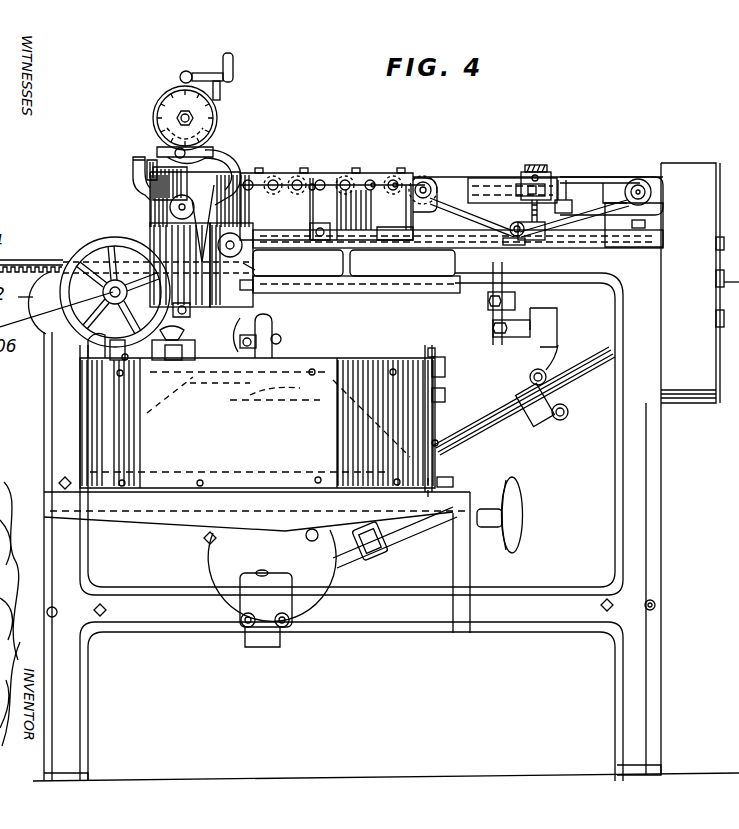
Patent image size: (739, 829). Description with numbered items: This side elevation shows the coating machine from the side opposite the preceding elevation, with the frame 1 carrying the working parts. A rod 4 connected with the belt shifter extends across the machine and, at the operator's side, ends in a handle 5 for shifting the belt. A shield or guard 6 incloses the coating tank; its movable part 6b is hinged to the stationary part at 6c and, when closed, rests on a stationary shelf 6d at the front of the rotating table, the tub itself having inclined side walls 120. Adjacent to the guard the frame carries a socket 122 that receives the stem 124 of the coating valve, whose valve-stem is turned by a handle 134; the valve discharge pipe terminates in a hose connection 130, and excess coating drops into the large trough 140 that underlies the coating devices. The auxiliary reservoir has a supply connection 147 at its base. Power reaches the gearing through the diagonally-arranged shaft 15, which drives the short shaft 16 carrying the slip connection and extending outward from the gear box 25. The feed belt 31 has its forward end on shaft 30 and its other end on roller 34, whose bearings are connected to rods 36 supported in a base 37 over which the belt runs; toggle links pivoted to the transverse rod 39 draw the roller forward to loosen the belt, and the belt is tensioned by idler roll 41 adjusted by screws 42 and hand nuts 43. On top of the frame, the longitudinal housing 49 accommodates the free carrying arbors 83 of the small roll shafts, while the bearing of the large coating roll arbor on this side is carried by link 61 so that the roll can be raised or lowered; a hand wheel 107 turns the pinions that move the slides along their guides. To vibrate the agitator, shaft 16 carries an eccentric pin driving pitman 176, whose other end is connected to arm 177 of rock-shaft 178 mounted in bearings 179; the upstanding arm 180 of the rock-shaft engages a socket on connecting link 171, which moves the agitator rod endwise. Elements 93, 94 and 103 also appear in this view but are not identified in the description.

The frame 1 is at (722, 207).
The rod 4 is at (417, 535).
The handle 5 is at (522, 525).
The shield 6 is at (257, 435).
The movable part of guard 6b is at (198, 414).
The hinge of guard 6c is at (438, 355).
The stationary shelf 6d is at (238, 588).
The diagonally-arranged shaft 15 is at (524, 401).
The short shaft 16 is at (515, 337).
The gear box 25 is at (561, 327).
The shaft 30 is at (640, 192).
The feed belt 31 is at (592, 173).
The roller 34 is at (433, 182).
The rods 36 is at (453, 183).
The base 37 is at (483, 178).
The transverse rod 39 is at (572, 213).
The idler roll 41 is at (517, 240).
The screws 42 is at (530, 212).
The hand nuts 43 is at (540, 172).
The housing 49 is at (267, 177).
The link 61 is at (232, 343).
The arbors 83 is at (395, 182).
The link 93 is at (243, 263).
The rail 94 is at (403, 293).
The crank handle 103 is at (232, 62).
The hand wheel 107 is at (85, 248).
The inclined side walls 120 is at (331, 402).
The socket 122 is at (158, 352).
The stem 124 is at (218, 355).
The hose connection 130 is at (262, 360).
The handle 134 is at (272, 340).
The trough 140 is at (312, 292).
The supply connection 147 is at (150, 183).
The connecting link 171 is at (310, 187).
The pitman 176 is at (492, 318).
The arm 177 is at (484, 290).
The rock-shaft 178 is at (402, 263).
The bearings 179 is at (495, 238).
The upstanding arm 180 is at (326, 206).